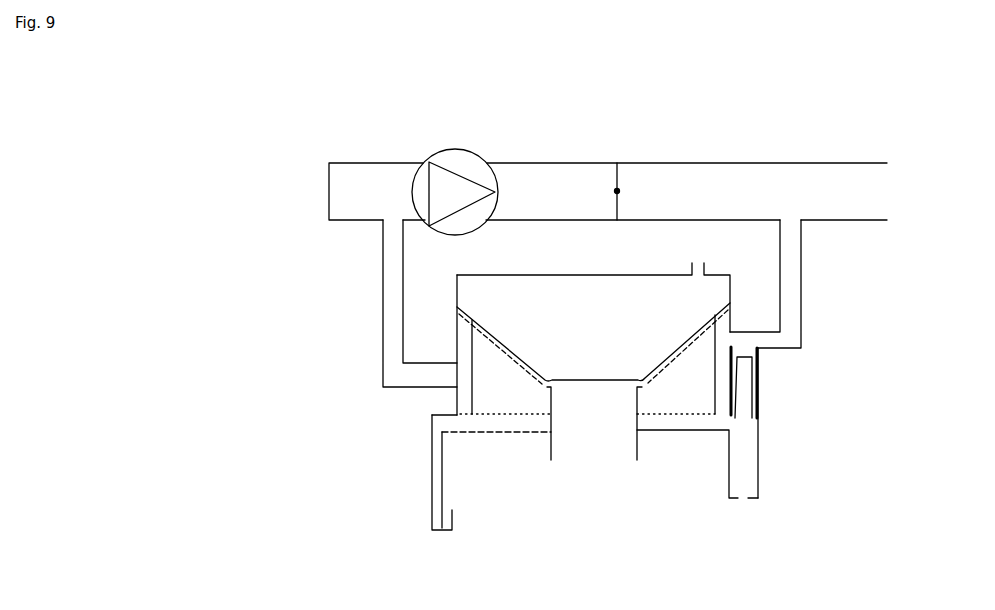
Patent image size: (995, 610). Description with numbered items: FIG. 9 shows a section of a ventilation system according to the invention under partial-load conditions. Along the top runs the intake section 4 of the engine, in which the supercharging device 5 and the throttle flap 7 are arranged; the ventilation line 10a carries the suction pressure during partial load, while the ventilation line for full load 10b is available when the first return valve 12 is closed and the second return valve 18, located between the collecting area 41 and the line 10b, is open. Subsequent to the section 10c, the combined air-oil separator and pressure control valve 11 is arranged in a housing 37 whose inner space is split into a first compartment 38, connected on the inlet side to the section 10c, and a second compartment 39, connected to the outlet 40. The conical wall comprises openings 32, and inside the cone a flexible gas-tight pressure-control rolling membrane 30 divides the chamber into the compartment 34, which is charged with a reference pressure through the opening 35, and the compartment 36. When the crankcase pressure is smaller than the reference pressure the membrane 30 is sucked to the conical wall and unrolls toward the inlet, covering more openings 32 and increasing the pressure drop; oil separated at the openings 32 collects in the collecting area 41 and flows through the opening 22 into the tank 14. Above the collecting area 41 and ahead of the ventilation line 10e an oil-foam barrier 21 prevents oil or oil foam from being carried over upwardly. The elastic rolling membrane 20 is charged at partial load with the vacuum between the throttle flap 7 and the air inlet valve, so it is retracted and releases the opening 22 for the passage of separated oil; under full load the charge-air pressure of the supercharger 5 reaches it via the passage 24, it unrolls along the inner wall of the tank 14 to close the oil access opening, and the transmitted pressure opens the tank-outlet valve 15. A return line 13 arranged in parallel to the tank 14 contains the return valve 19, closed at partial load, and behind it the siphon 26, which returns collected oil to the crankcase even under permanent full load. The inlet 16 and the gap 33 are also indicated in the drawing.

The intake section 4 is at (693, 170).
The supercharging device 5 is at (470, 162).
The throttle flap 7 is at (618, 207).
The ventilation line 10a is at (802, 297).
The ventilation line for full load 10b is at (382, 307).
The ventilation line section 10c is at (598, 464).
The ventilation line 10e is at (722, 377).
The combined air-oil separator and pressure control valve 11 is at (629, 327).
The first return valve 12 is at (738, 327).
The outlet line 13 is at (432, 476).
The tank 14 is at (755, 470).
The tank-outlet valve 15 is at (745, 500).
The inlet 16 is at (790, 347).
The second return valve 18 is at (455, 380).
The return valve 19 is at (460, 430).
The rolling membrane 20 is at (756, 378).
The oil-foam barrier 21 is at (680, 412).
The opening 22 is at (728, 426).
The passage 24 is at (743, 355).
The siphon 26 is at (443, 533).
The pressure-control rolling membrane 30 is at (570, 378).
The openings 32 is at (495, 345).
The gap 33 is at (516, 377).
The compartment 34 is at (575, 312).
The opening 35 is at (729, 258).
The compartment 36 is at (501, 400).
The housing 37 is at (732, 285).
The compartment 38 is at (602, 400).
The compartment 39 is at (702, 408).
The outlet 40 is at (463, 410).
The collecting area 41 is at (515, 428).